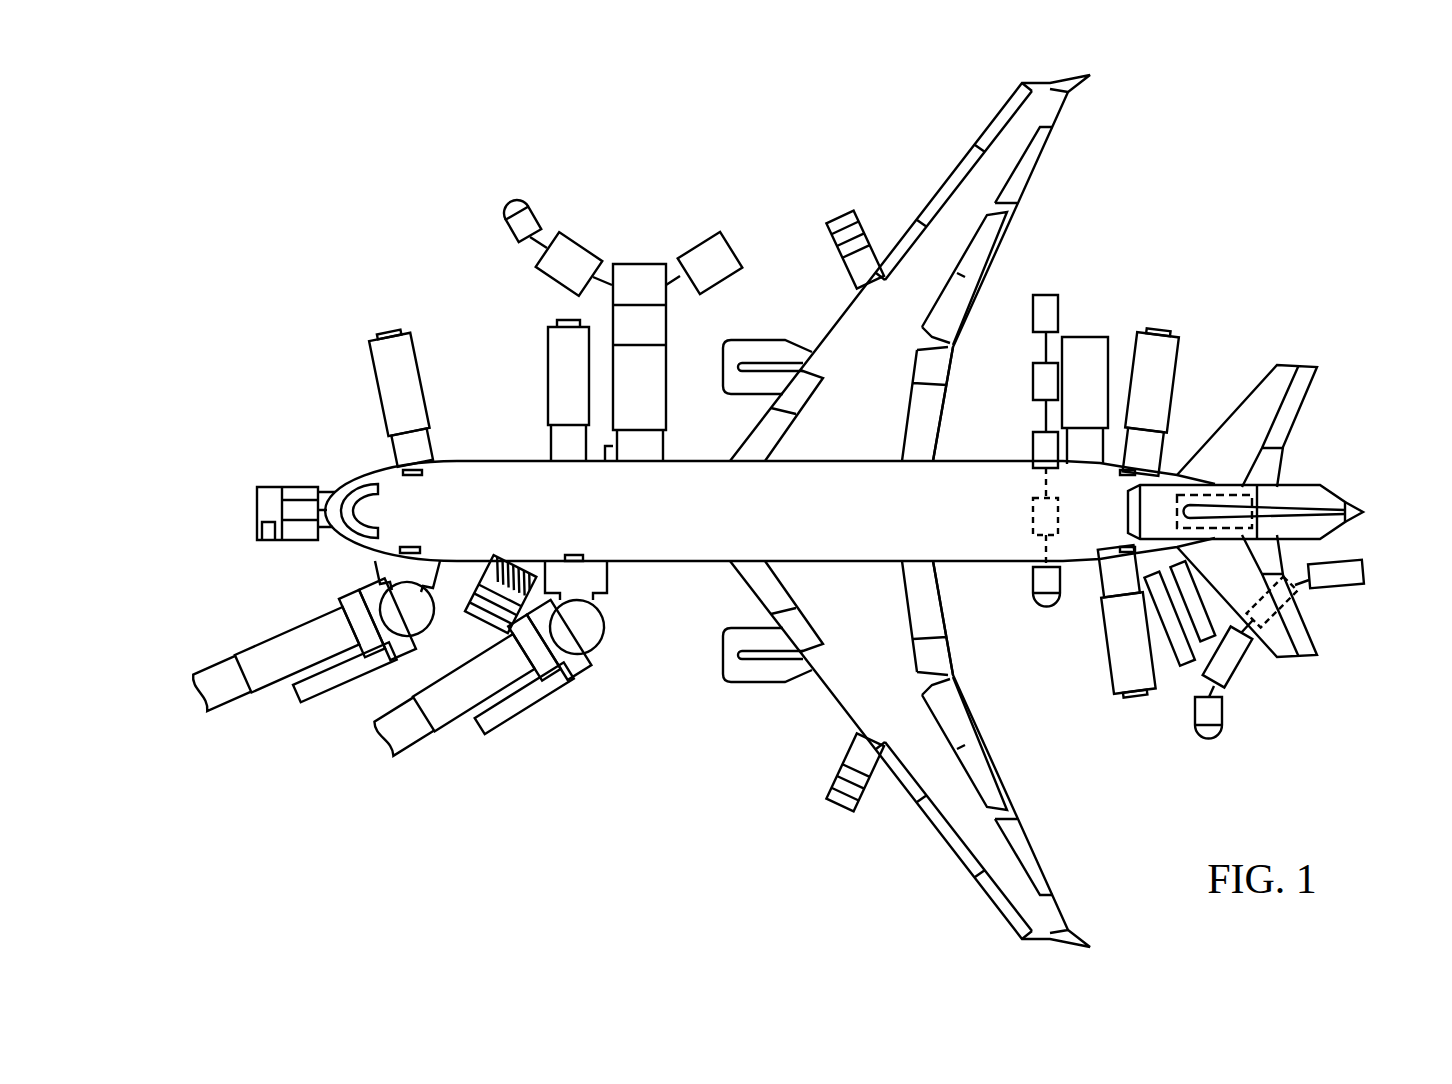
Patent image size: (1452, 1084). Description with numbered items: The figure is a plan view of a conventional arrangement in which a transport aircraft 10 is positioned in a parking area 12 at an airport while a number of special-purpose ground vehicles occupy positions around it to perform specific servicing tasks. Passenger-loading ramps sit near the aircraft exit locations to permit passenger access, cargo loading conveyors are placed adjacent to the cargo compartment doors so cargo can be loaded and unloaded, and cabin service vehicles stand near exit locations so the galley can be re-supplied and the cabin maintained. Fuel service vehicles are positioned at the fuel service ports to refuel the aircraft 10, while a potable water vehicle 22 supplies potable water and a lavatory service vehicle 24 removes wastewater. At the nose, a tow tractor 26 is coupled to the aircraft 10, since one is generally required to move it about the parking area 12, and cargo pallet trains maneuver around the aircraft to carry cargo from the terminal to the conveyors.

The transport aircraft 10 is at (693, 529).
The parking area 12 is at (442, 219).
The potable water vehicle 22 is at (478, 632).
The lavatory service vehicle 24 is at (1222, 494).
The tow tractor 26 is at (284, 487).